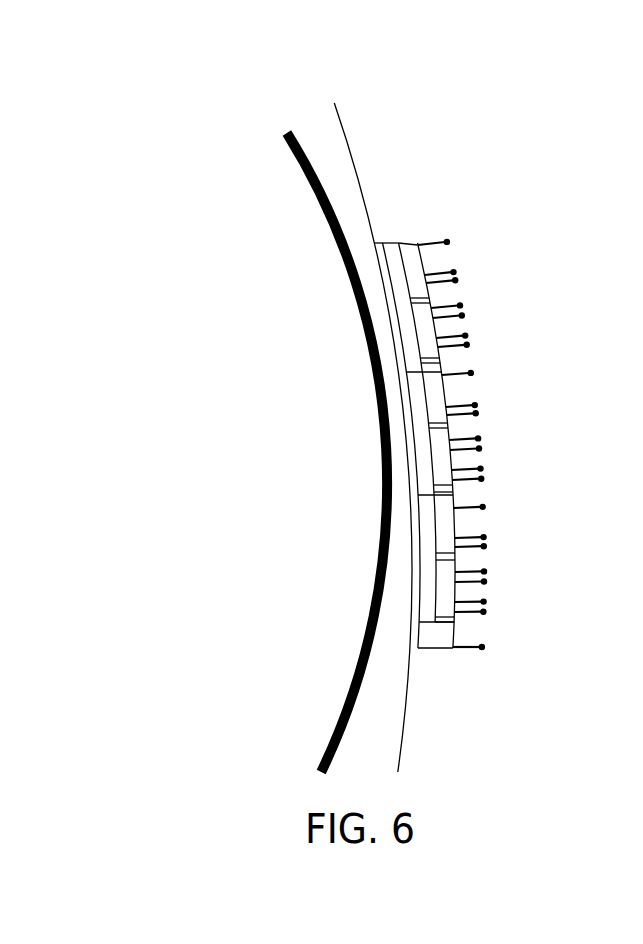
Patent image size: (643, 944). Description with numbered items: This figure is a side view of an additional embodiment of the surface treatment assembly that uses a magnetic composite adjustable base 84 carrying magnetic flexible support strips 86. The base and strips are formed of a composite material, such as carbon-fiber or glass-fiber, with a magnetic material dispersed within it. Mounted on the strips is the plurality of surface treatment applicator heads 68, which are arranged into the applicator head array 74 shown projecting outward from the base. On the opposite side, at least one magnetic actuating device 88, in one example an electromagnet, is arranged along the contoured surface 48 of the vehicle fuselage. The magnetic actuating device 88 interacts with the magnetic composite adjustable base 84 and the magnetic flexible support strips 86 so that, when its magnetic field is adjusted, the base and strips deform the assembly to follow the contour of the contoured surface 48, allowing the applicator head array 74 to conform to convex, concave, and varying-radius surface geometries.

The contoured surface 48 is at (286, 132).
The surface treatment applicator heads 68 is at (415, 265).
The applicator head array 74 is at (510, 435).
The magnetic composite adjustable base 84 is at (408, 727).
The magnetic flexible support strips 86 is at (340, 120).
The magnetic actuating device 88 is at (285, 177).